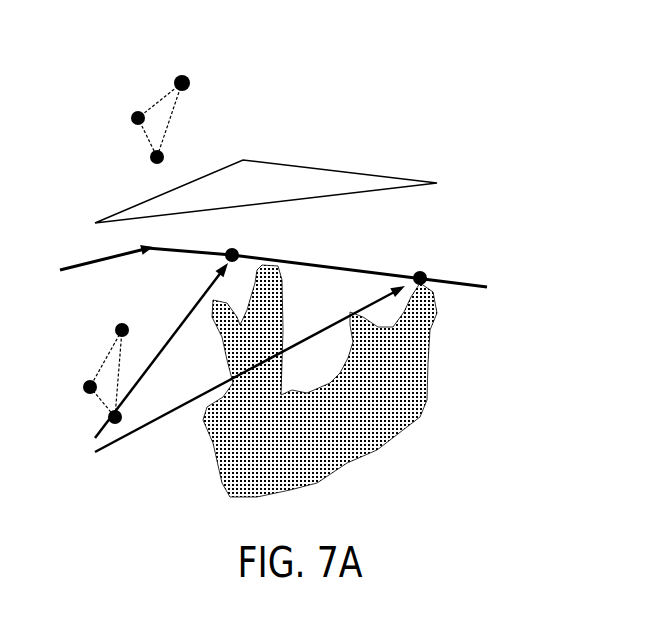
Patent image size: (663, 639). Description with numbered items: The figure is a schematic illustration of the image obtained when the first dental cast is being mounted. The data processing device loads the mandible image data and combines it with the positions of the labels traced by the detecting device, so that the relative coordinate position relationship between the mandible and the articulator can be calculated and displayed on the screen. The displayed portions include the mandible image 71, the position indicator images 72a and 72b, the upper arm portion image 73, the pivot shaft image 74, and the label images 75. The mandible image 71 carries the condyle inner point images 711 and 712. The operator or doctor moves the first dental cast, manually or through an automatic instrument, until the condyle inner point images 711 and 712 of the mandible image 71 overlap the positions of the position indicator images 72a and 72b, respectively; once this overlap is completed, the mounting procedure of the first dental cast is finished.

The mandible image 71 is at (318, 457).
The condyle inner point image 711 is at (265, 280).
The condyle inner point image 712 is at (430, 295).
The position indicator image 72a is at (141, 355).
The position indicator image 72b is at (230, 380).
The upper arm portion image 73 is at (170, 185).
The pivot shaft image 74 is at (255, 266).
The label images 75 is at (150, 88).